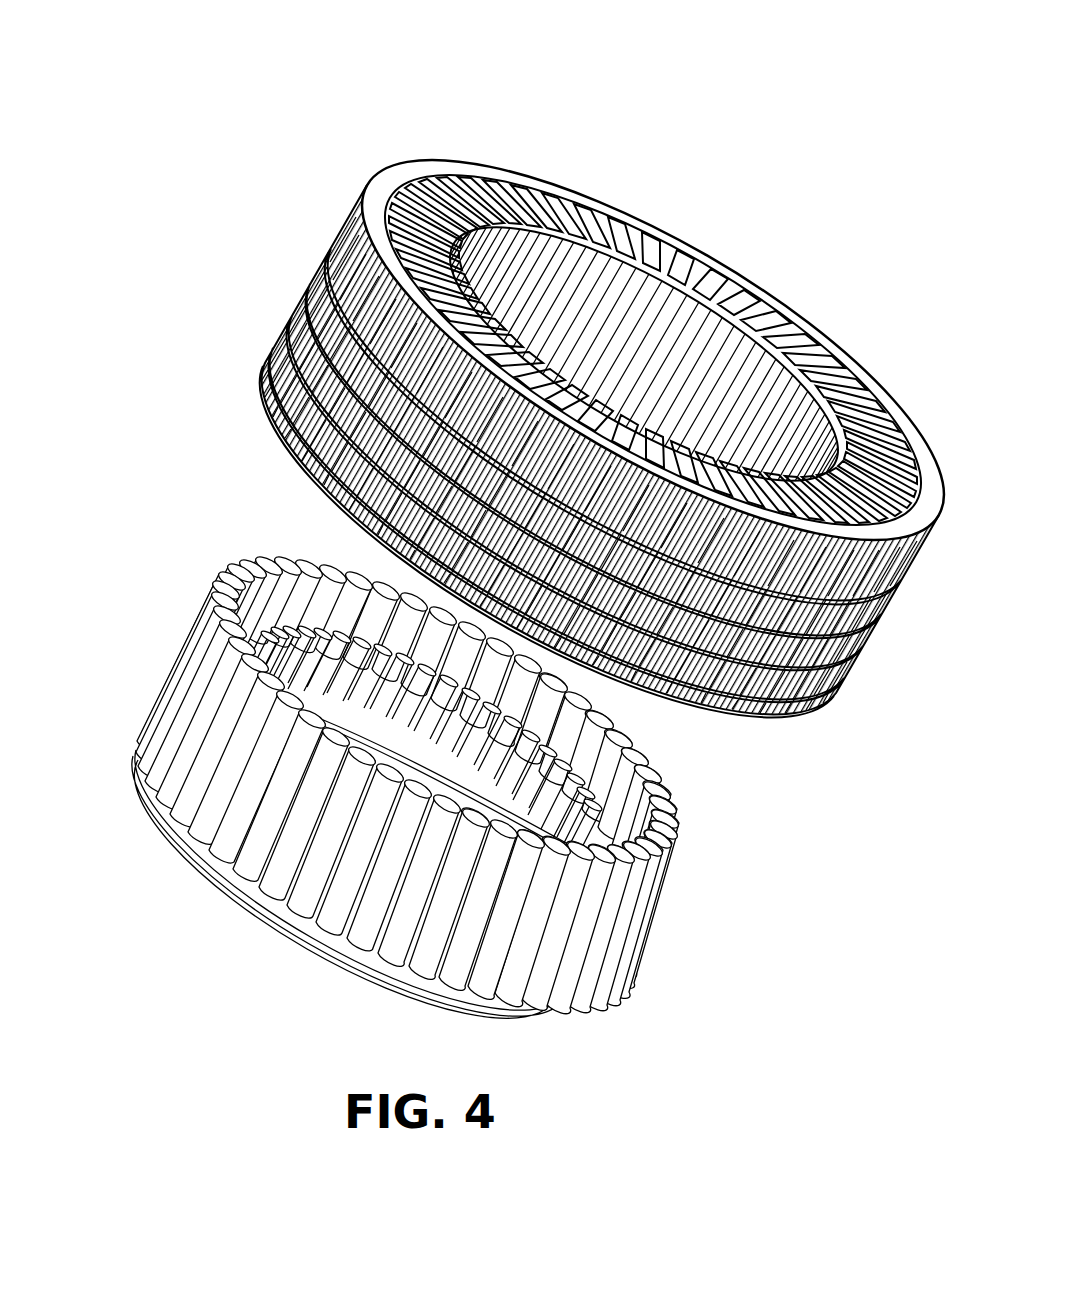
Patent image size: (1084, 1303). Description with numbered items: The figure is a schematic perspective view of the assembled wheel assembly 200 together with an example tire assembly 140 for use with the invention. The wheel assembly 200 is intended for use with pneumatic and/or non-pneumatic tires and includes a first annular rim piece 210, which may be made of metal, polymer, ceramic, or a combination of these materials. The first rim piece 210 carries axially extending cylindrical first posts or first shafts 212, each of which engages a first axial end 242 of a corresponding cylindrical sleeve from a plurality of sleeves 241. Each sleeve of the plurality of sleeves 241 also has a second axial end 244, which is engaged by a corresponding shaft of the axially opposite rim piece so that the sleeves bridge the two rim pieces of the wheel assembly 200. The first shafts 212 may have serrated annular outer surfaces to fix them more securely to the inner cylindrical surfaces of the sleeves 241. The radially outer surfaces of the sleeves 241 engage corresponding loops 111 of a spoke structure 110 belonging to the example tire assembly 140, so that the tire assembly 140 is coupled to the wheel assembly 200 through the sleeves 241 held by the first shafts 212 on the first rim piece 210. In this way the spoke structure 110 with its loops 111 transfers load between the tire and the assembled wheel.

The spoke structure 110 is at (440, 220).
The loops 111 is at (718, 285).
The tire assembly 140 is at (576, 404).
The wheel assembly 200 is at (529, 517).
The first annular rim piece 210 is at (385, 755).
The first shafts 212 is at (214, 872).
The sleeves 241 is at (583, 934).
The first axial end 242 is at (185, 804).
The second axial end 244 is at (285, 552).